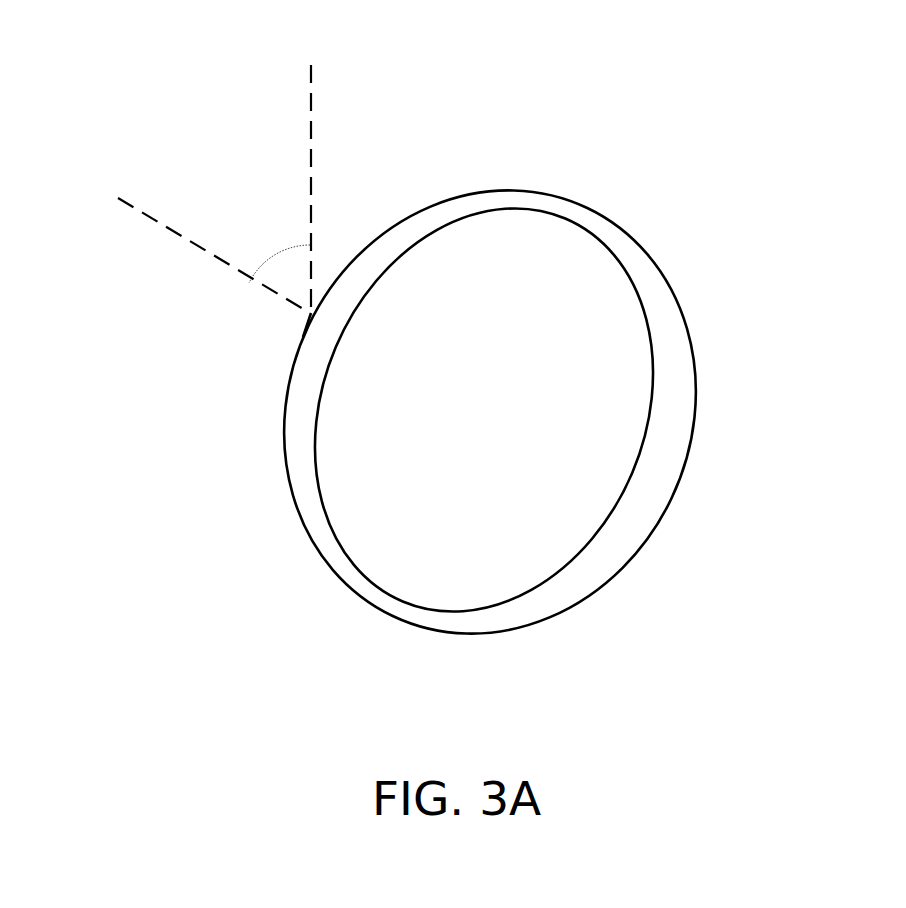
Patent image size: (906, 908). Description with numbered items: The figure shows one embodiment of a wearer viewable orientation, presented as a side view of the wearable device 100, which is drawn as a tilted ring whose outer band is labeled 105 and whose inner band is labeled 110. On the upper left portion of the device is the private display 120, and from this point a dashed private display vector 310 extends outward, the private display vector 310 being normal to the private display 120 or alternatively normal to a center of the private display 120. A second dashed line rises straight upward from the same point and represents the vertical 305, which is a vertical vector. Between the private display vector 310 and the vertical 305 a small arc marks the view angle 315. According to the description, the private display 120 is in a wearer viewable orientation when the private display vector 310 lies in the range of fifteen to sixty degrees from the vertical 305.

The wearable device 100 is at (112, 78).
The ring-shaped frame / outer surface 105 is at (377, 607).
The inner surface of ring 110 is at (650, 540).
The private display 120 is at (304, 338).
The vertical 305 is at (313, 123).
The private display vector 310 is at (193, 247).
The view angle 315 is at (265, 253).